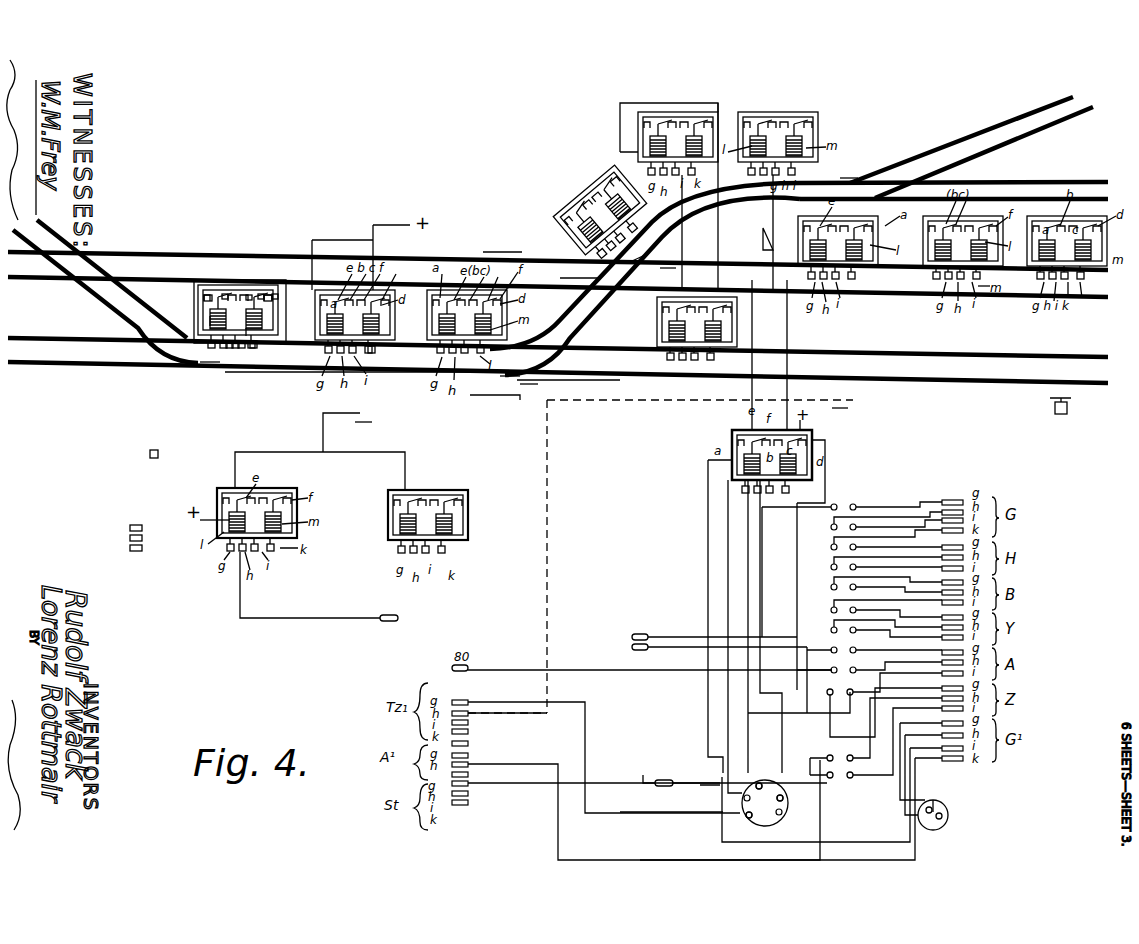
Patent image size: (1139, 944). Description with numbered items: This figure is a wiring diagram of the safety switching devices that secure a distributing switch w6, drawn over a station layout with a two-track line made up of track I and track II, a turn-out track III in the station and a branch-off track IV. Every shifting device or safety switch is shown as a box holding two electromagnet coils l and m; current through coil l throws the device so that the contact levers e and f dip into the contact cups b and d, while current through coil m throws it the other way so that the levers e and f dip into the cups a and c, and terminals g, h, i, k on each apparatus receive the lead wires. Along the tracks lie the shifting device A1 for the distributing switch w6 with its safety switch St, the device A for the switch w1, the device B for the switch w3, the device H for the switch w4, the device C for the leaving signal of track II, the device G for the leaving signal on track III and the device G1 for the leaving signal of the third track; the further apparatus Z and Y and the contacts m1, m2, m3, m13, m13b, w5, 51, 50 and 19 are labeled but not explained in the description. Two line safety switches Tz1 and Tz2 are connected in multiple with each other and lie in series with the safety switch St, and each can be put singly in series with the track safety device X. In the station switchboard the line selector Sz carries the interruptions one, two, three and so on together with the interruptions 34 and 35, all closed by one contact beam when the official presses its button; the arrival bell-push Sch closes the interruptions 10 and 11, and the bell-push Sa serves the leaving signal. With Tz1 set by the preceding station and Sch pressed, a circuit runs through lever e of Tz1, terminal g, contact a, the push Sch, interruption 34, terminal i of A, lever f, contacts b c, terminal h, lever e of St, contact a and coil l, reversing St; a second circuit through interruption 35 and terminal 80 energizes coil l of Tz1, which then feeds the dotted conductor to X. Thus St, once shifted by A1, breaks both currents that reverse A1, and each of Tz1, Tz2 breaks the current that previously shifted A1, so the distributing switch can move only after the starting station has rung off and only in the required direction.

The track I is at (12, 360).
The track II is at (16, 270).
The turn-out track III is at (1114, 201).
The branch-off track IV is at (1092, 121).
The shifting-device for the distributing-switch A1 is at (270, 318).
The safety-switch St is at (380, 328).
The point-shifting switch A is at (446, 290).
The relay Z is at (657, 318).
The shifting device for switch W3 B is at (604, 215).
The relay Y is at (690, 112).
The shifting device for switch W4 H is at (784, 112).
The shifting device for train-leaving signal of track II C is at (845, 247).
The shifting device for train-leaving signal on track III G is at (988, 216).
The shifting device for leaving-signal of third track G1 is at (1096, 242).
The track safety-switch X is at (822, 450).
The line safety-switch Tz1 is at (276, 490).
The line safety-switch Tz2 is at (440, 492).
The contact-cup a is at (208, 297).
The contact-cup b is at (250, 298).
The contact-cup c is at (262, 297).
The contact-cup d is at (270, 300).
The contact-lever e is at (226, 297).
The contact-lever f is at (276, 296).
The terminal g is at (229, 350).
The terminal h is at (241, 350).
The terminal i is at (253, 350).
The terminal k is at (376, 351).
The electromagnet-coil l is at (212, 318).
The electromagnet-coil m is at (258, 330).
The contact m1 is at (666, 262).
The contact m2 is at (531, 395).
The contact m3 is at (502, 239).
The contact m13 is at (1072, 406).
The contact m13 m13b is at (666, 792).
The switch W1 w1 is at (507, 376).
The switch W3 w3 is at (638, 250).
The switch W4 w4 is at (849, 185).
The contact w5 is at (580, 270).
The distributing switch W6 w6 is at (206, 362).
The distributing-switch (line-selector) Sz is at (814, 588).
The bell-push for arrival signal Sch is at (771, 810).
The bell-push for leaving-signal Sa is at (922, 820).
The terminal 80 is at (393, 609).
The contact 51 is at (850, 694).
The interruption of the line-selector 34 is at (850, 758).
The interruption of the line-selector 35 is at (847, 778).
The contact 50 is at (943, 810).
The interruption of bell-push Sch 10 is at (784, 798).
The interruption of bell-push Sch 11 is at (756, 787).
The contact 19 is at (758, 820).